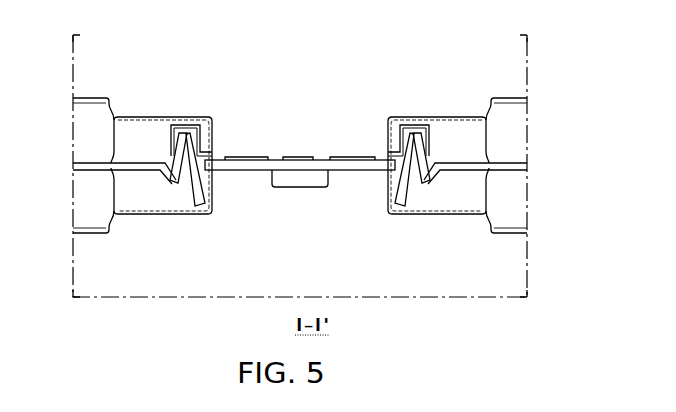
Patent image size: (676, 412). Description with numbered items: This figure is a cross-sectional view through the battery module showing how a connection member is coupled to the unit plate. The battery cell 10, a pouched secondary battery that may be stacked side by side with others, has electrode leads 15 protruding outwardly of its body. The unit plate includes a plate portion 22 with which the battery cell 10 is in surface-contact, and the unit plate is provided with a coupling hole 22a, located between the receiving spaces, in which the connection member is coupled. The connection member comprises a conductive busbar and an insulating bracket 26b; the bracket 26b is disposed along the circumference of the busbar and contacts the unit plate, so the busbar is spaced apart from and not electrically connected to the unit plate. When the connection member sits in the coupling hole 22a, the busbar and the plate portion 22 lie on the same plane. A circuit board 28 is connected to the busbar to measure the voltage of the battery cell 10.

The battery cell 10 is at (80, 142).
The electrode lead 15 is at (213, 189).
The plate portion 22 is at (470, 162).
The coupling hole 22a is at (172, 140).
The bracket 26b is at (398, 207).
The circuit board 28 is at (300, 157).